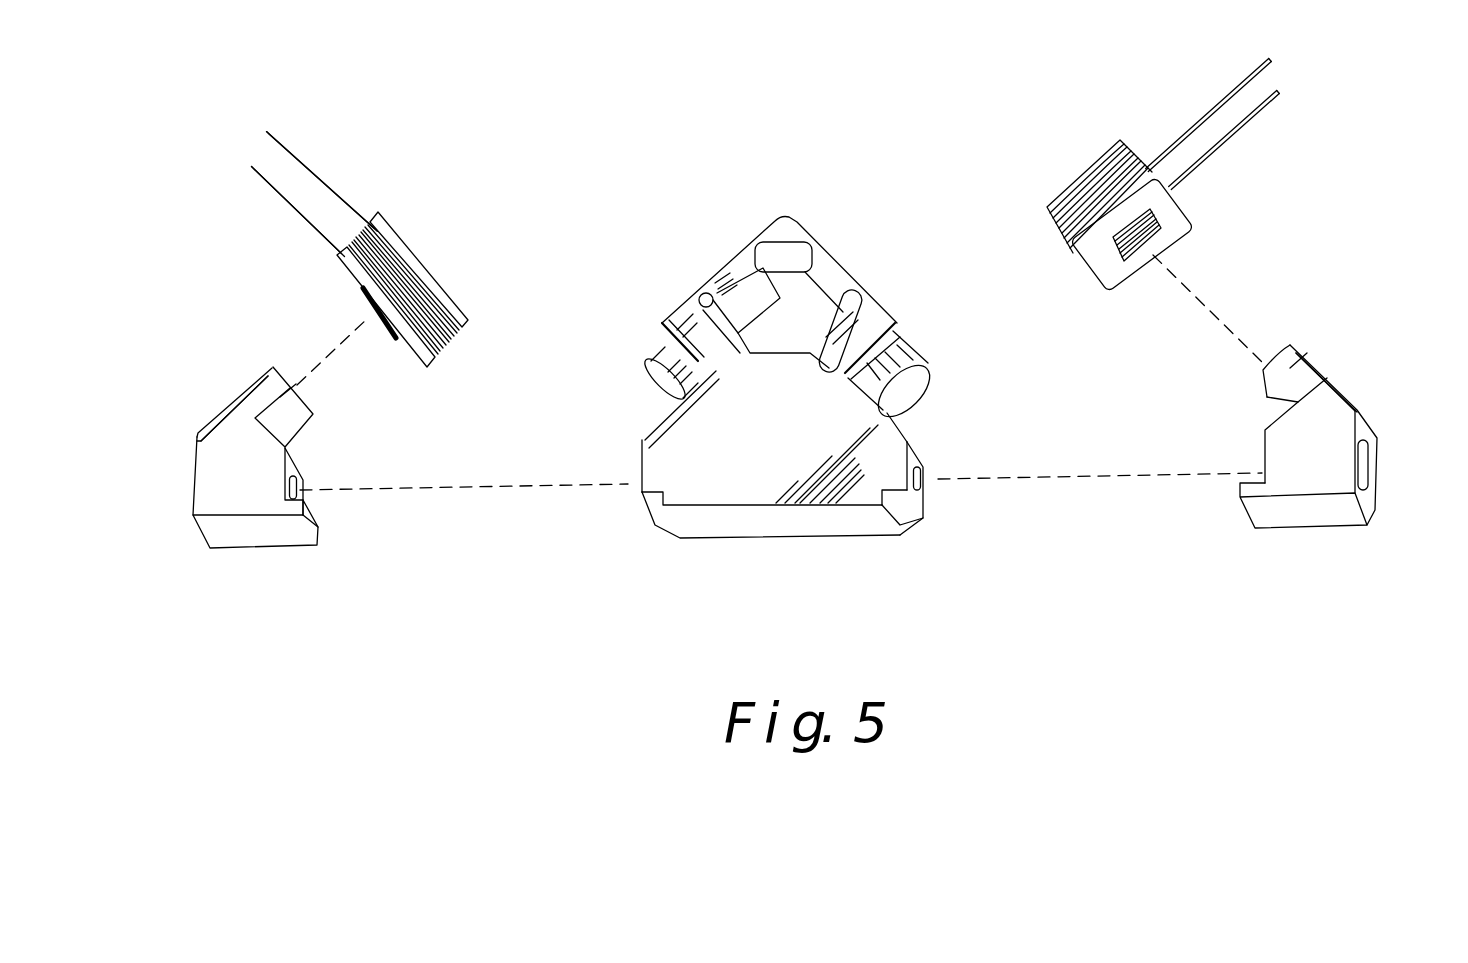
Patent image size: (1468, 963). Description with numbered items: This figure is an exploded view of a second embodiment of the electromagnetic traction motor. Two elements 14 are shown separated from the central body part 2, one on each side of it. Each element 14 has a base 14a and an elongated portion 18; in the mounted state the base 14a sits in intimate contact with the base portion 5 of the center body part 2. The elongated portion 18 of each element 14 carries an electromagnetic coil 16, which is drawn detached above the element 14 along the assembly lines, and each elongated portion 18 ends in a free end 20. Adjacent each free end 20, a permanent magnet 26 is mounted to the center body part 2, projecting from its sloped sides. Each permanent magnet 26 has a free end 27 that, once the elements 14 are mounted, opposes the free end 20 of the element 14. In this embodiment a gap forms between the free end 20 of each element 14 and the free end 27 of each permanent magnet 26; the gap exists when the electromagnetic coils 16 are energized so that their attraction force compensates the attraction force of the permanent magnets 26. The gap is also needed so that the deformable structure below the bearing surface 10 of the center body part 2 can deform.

The central body part 2 is at (752, 527).
The base portion 5 is at (853, 483).
The bearing surface 10 is at (786, 216).
The element 14 is at (200, 471).
The base 14a is at (243, 508).
The electromagnetic coil 16 is at (418, 247).
The elongated portion 18 is at (257, 397).
The free end 20 is at (286, 376).
The permanent magnet 26 is at (661, 352).
The free end 27 is at (656, 392).